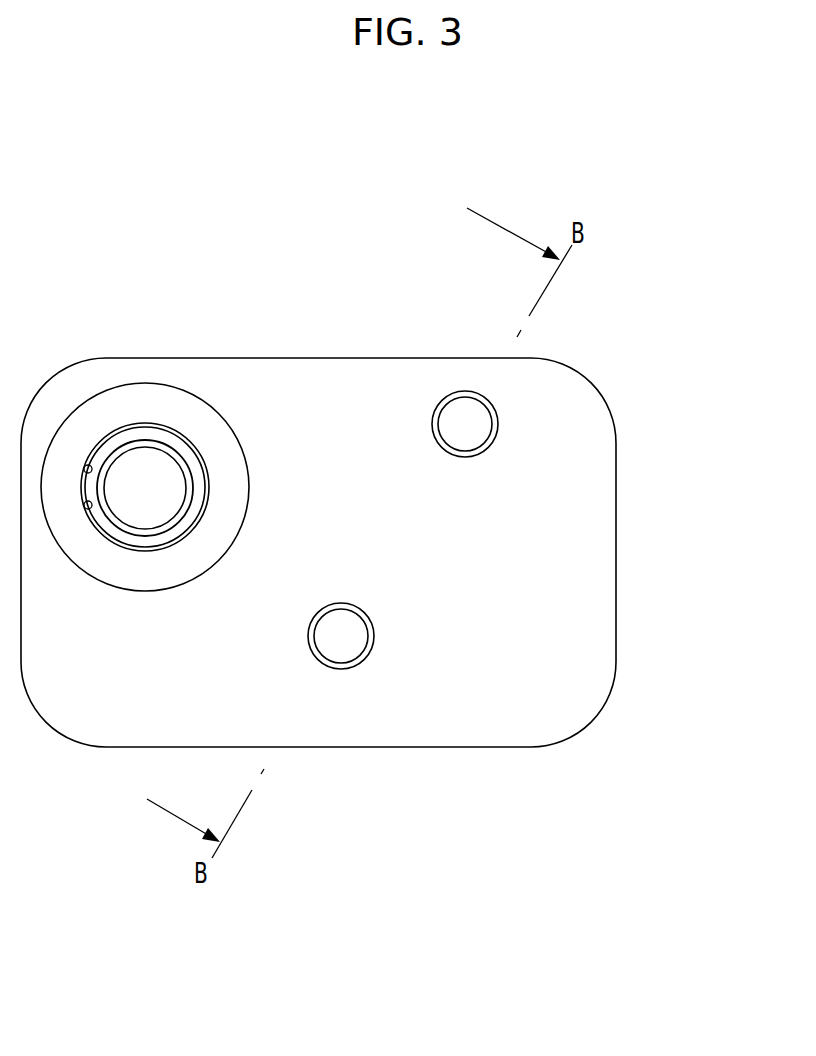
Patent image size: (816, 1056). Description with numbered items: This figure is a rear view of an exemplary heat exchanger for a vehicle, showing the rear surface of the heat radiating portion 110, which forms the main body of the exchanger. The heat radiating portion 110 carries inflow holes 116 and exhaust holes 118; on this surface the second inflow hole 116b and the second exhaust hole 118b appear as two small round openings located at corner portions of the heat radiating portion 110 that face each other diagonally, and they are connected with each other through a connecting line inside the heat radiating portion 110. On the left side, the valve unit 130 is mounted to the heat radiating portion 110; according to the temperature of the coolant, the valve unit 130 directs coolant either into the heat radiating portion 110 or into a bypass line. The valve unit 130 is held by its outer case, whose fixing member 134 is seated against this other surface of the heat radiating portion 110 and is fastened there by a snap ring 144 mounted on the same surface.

The heat radiating portion 110 is at (606, 376).
The inflow holes 116 is at (512, 444).
The second inflow hole 116b is at (462, 408).
The exhaust holes 118 is at (346, 684).
The second exhaust hole 118b is at (349, 618).
The valve unit 130 is at (158, 414).
The fixing member 134 is at (155, 472).
The snap ring 144 is at (208, 485).